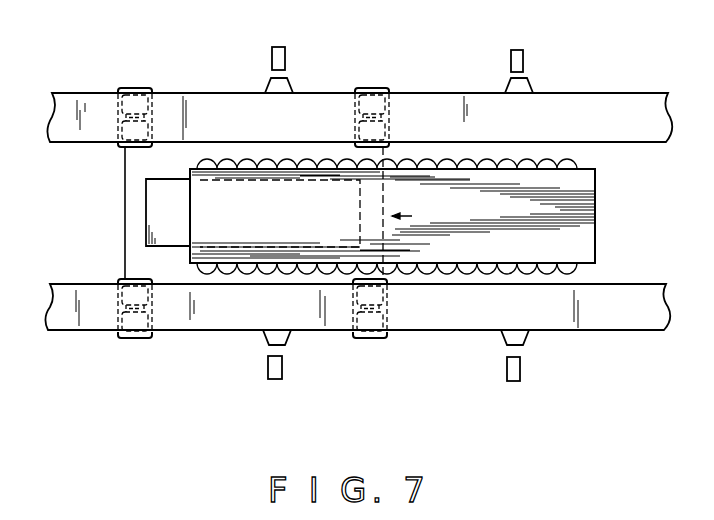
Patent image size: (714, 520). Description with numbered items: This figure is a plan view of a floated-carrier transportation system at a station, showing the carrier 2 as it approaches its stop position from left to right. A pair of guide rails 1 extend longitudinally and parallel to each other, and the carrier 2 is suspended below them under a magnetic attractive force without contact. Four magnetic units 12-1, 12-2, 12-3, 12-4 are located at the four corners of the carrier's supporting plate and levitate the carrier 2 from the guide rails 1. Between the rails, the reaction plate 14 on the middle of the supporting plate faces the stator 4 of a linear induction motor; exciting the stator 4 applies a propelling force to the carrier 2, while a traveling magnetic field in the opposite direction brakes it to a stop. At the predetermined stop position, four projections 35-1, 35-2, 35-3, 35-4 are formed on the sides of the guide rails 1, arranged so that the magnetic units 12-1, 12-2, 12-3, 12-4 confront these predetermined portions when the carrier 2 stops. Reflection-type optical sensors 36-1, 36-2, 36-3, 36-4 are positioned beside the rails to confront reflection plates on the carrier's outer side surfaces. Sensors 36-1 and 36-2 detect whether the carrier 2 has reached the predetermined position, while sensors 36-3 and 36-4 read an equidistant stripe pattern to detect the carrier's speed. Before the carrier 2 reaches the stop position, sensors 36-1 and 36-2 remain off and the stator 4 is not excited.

The guide rail 1 is at (642, 104).
The carrier 2 is at (124, 182).
The stator 4 is at (597, 239).
The reaction plate 14 is at (146, 220).
The magnetic unit 12-1 is at (140, 88).
The magnetic unit 12-2 is at (380, 88).
The magnetic unit 12-3 is at (132, 338).
The magnetic unit 12-4 is at (378, 338).
The projection 35-1 is at (286, 88).
The projection 35-2 is at (530, 88).
The projection 35-3 is at (283, 344).
The projection 35-4 is at (526, 344).
The optical sensor 36-1 is at (280, 47).
The optical sensor 36-2 is at (517, 50).
The optical sensor 36-3 is at (275, 380).
The optical sensor 36-4 is at (514, 382).